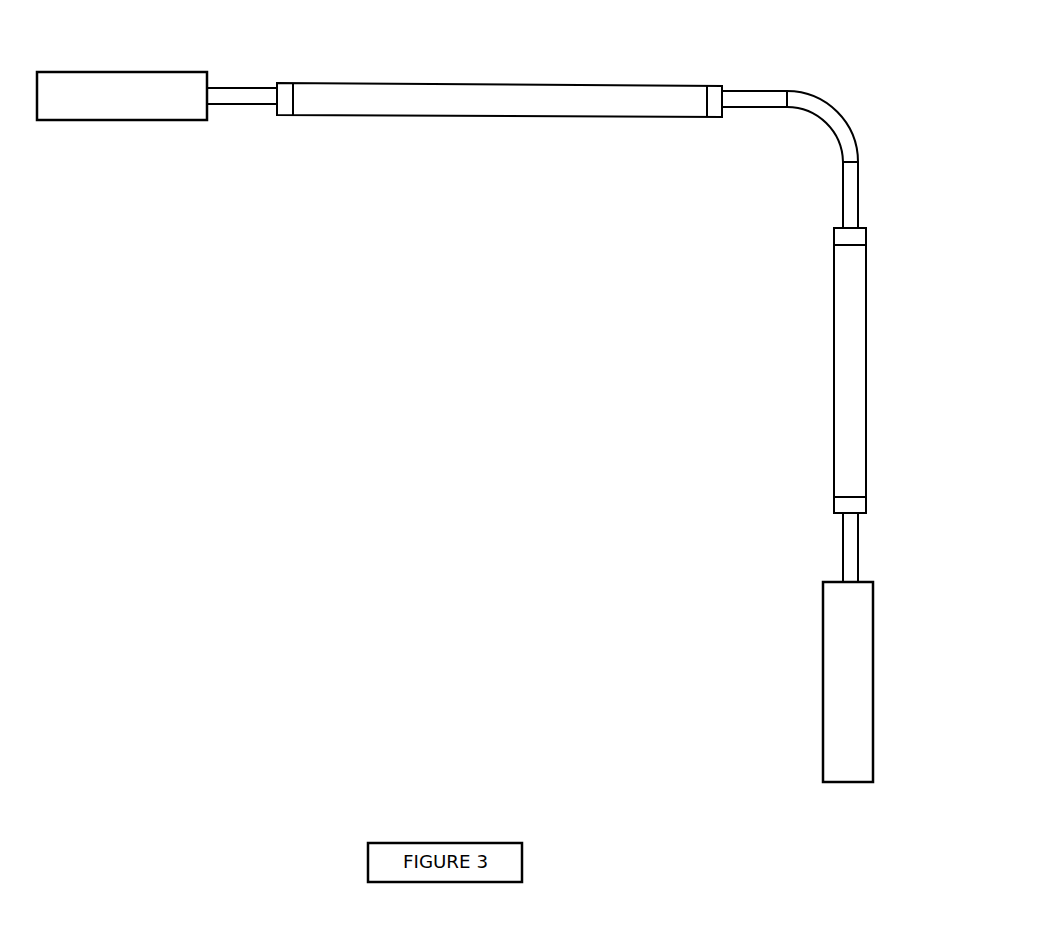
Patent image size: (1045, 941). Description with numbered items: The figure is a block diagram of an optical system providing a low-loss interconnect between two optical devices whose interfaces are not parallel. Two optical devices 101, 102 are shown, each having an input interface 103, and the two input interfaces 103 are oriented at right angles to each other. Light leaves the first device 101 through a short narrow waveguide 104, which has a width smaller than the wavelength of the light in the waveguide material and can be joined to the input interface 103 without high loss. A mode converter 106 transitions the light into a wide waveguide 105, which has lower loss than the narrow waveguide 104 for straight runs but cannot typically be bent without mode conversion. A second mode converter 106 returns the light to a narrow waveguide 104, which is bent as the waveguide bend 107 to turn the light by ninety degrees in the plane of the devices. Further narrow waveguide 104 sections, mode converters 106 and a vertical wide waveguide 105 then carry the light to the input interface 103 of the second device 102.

The optical device 101 is at (122, 96).
The optical device 102 is at (848, 682).
The input interface 103 is at (243, 163).
The narrow waveguide 104 is at (738, 117).
The wide waveguide 105 is at (910, 372).
The mode converter 106 is at (692, 122).
The waveguide bend 107 is at (870, 70).